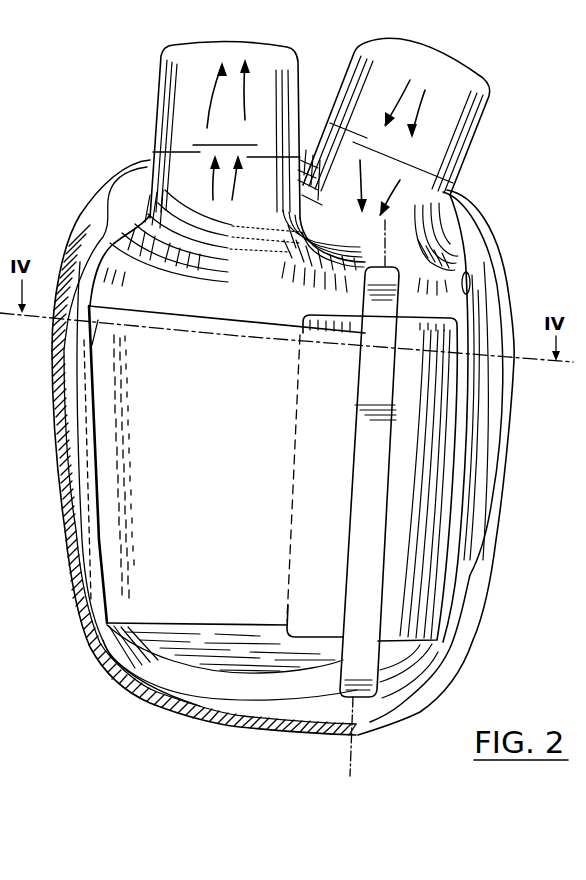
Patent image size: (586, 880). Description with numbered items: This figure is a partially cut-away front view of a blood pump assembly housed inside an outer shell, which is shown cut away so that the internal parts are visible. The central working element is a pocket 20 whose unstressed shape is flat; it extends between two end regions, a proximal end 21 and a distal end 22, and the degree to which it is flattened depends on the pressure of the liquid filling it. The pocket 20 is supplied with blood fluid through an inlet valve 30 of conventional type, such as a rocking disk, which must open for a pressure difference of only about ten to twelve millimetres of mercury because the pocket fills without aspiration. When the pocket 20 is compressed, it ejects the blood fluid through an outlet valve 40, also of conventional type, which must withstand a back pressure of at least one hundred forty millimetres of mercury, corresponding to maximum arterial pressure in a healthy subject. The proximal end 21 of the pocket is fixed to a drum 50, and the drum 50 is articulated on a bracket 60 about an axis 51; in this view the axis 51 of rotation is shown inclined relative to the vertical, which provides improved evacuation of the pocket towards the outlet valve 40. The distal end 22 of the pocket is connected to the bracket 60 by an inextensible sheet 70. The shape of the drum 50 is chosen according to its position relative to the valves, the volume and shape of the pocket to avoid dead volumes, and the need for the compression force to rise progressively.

The pocket 20 is at (275, 311).
The proximal end 21 is at (473, 262).
The distal end 22 is at (110, 344).
The inlet valve 30 is at (413, 160).
The outlet valve 40 is at (207, 143).
The drum 50 is at (417, 453).
The axis 51 is at (385, 232).
The bracket 60 is at (366, 471).
The inextensible sheet 70 is at (243, 459).